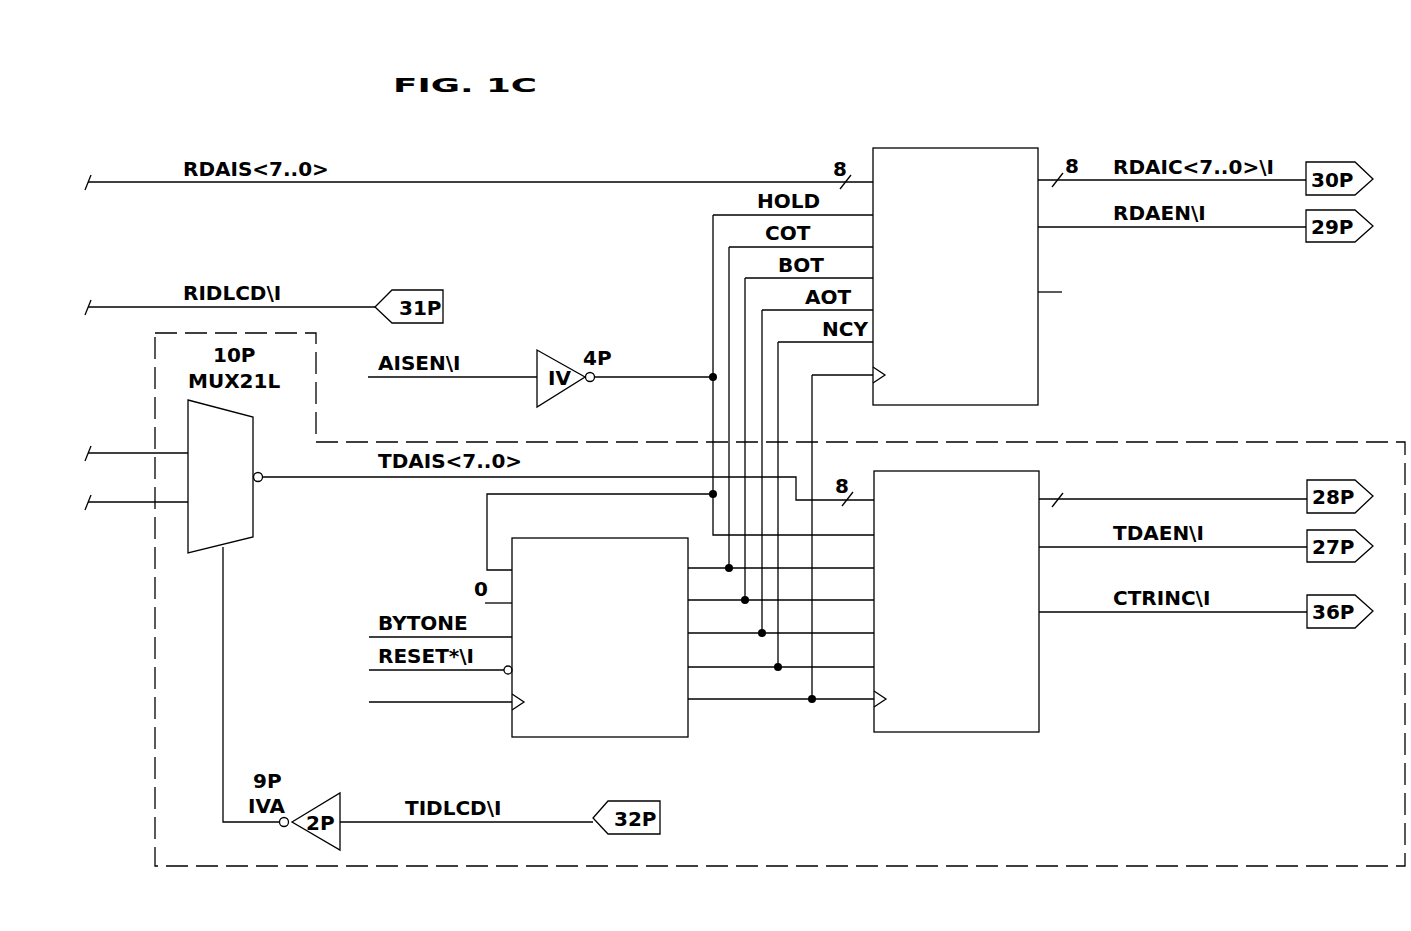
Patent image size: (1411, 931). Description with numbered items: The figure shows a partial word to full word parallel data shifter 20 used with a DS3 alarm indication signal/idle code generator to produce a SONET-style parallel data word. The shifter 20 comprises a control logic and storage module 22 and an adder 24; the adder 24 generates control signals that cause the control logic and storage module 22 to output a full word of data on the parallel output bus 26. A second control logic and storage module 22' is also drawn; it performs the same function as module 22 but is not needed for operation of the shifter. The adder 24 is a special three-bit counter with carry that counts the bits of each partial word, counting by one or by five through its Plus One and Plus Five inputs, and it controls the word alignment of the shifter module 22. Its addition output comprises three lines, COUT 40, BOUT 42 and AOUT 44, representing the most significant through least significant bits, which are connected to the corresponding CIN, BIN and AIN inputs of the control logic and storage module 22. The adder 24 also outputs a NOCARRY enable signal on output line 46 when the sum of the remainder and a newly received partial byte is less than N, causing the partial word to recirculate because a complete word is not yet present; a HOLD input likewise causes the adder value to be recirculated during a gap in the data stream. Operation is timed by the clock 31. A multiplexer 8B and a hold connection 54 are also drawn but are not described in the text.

The partial word to full word parallel data shifter 20 is at (1262, 428).
The control logic and storage module 22 is at (1002, 602).
The second control logic and storage module 22' is at (1002, 264).
The adder 24 is at (690, 721).
The parallel output bus 26 is at (1089, 498).
The clock 31 is at (428, 706).
The COUT output line 40 is at (713, 566).
The BOUT output line 42 is at (733, 598).
The AOUT output line 44 is at (742, 632).
The NOCARRY output line 46 is at (745, 665).
The HOLD feedback line 54 is at (485, 541).
The multiplexer MUX21L 8B is at (189, 476).